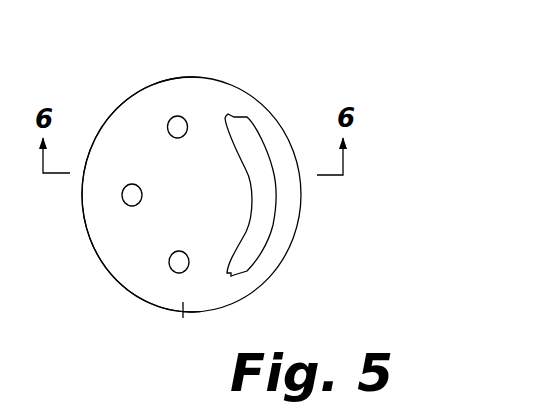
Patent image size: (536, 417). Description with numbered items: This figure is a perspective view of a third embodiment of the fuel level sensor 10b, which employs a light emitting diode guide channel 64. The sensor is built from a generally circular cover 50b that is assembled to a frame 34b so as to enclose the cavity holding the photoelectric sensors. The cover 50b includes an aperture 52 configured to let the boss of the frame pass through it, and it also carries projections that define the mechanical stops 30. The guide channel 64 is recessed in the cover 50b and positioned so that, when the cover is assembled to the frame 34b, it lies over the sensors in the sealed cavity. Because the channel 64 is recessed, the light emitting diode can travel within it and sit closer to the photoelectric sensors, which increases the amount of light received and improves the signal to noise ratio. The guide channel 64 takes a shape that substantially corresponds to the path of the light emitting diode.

The fuel level sensor 10b is at (294, 82).
The mechanical stops 30 is at (178, 121).
The frame 34b is at (100, 288).
The cover 50b is at (183, 318).
The aperture 52 is at (129, 199).
The LED guide channel 64 is at (266, 198).